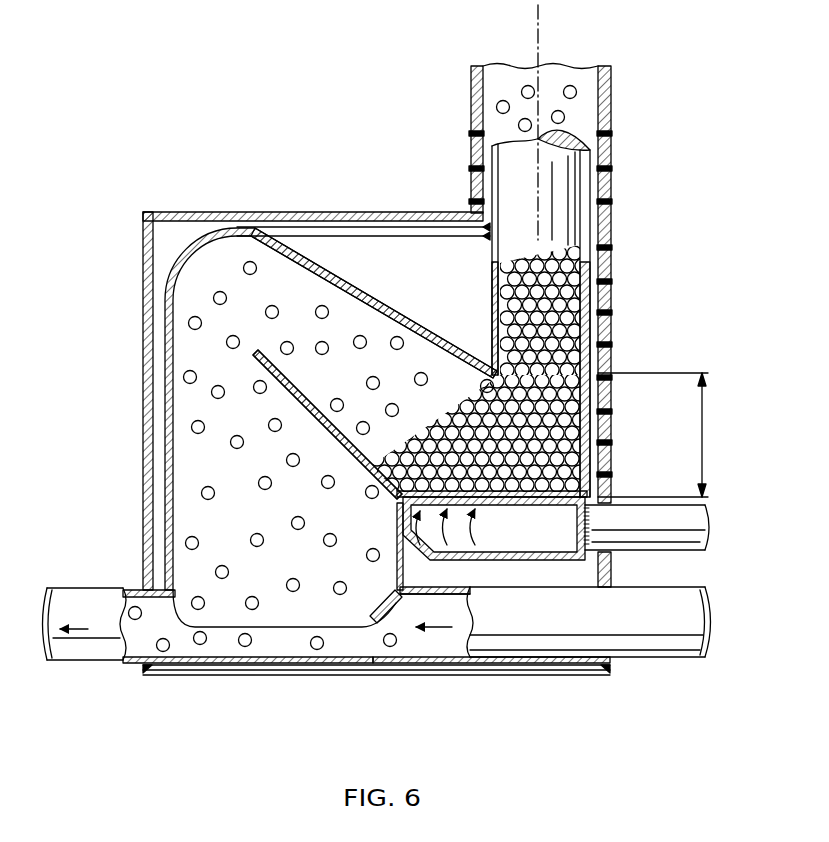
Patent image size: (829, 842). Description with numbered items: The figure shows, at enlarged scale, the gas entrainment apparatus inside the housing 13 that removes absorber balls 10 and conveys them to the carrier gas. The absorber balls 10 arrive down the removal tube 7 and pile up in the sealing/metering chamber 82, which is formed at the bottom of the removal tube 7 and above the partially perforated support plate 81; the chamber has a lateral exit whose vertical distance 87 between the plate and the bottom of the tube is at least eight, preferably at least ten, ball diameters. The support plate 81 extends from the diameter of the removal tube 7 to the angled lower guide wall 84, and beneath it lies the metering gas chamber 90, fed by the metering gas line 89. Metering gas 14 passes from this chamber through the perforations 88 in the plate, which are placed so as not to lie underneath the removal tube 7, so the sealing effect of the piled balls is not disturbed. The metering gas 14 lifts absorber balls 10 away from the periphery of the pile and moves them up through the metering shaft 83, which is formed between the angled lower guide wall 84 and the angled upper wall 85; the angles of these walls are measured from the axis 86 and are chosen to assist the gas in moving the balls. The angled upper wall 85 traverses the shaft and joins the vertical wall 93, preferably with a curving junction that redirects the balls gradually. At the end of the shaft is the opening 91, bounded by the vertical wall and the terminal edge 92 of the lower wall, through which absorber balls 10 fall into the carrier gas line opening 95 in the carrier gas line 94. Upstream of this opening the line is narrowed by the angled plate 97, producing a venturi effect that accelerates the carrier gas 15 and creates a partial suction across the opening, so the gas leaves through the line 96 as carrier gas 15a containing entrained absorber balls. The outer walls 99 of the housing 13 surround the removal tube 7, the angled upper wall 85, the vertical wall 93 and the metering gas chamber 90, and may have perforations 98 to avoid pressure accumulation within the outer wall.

The axis 86 is at (546, 22).
The perforations 98 is at (611, 204).
The removal tube 7 is at (502, 158).
The outer walls 99 is at (475, 193).
The absorber balls 10 is at (192, 427).
The vertical wall 93 is at (167, 303).
The angled upper wall 85 is at (352, 280).
The opening 91 is at (208, 338).
The terminal edge 92 is at (256, 354).
The angled lower guide wall 84 is at (327, 420).
The metering shaft 83 is at (352, 386).
The sealing/metering chamber 82 is at (580, 394).
The partially perforated support plate 81 is at (583, 481).
The vertical distance 87 is at (703, 437).
The perforations 88 is at (397, 517).
The metering gas chamber 90 is at (567, 547).
The metering gas 14 is at (480, 545).
The metering gas line 89 is at (625, 552).
The carrier gas 15 is at (445, 628).
The line 96 is at (63, 661).
The carrier gas containing entrained absorber balls 15a is at (102, 620).
The carrier gas line opening 95 is at (278, 627).
The angled plate 97 is at (364, 627).
The housing 13 is at (330, 680).
The carrier gas line 94 is at (400, 672).